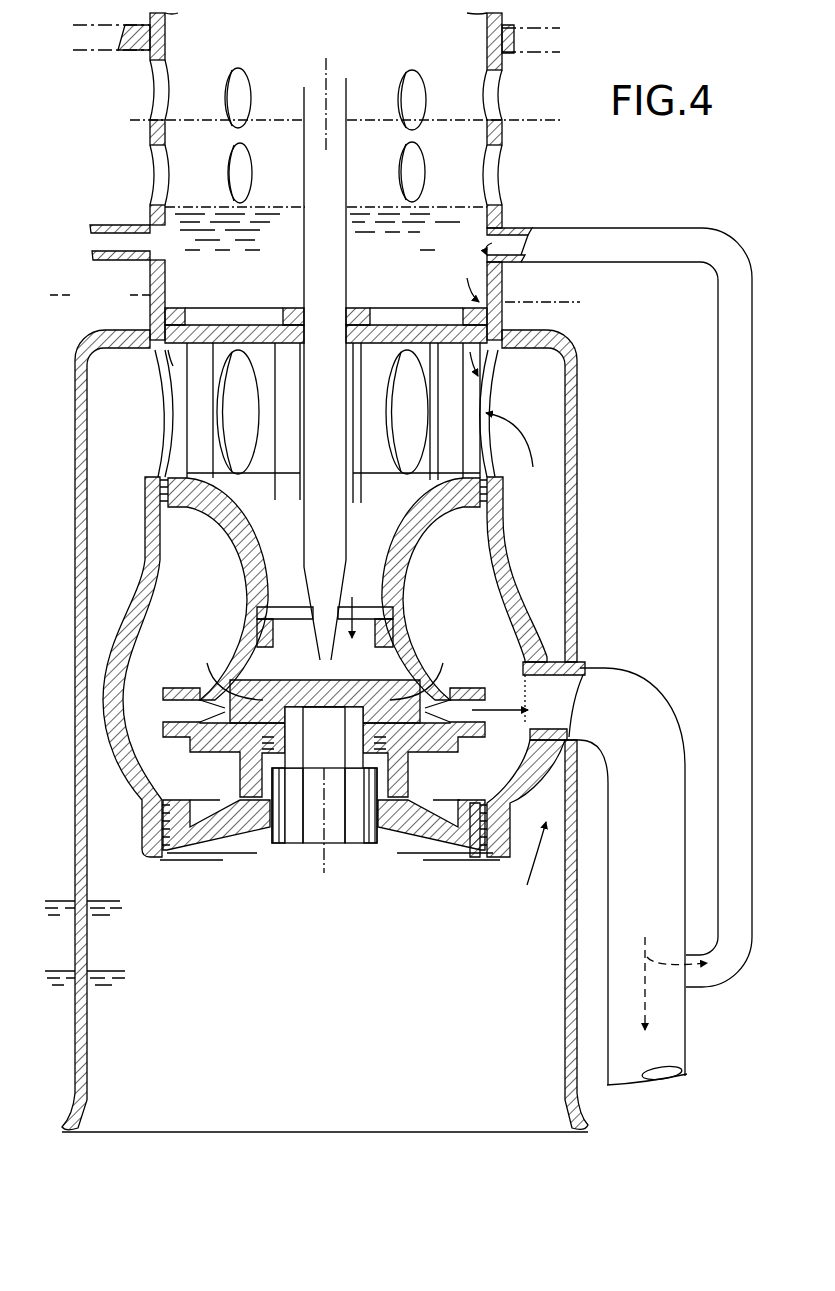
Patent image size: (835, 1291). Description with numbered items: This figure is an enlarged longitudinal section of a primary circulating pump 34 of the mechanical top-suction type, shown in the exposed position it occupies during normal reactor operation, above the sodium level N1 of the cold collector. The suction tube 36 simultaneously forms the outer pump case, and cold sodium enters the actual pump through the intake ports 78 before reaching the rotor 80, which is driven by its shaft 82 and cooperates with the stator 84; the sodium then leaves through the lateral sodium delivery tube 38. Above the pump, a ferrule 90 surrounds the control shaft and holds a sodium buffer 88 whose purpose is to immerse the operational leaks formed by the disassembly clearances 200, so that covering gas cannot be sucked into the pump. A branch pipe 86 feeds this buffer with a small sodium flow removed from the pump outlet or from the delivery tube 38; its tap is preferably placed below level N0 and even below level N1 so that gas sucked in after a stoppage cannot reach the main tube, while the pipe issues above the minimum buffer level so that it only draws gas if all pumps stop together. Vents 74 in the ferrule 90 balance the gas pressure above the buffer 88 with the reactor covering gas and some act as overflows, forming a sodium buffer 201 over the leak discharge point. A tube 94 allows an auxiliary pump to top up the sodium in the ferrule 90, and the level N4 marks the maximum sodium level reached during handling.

The pump 34 is at (595, 583).
The suction tube 36 is at (563, 1023).
The lateral sodium delivery tube 38 is at (625, 697).
The vents 74 is at (236, 168).
The cold sodium intake ports 78 is at (215, 433).
The rotor 80 is at (253, 668).
The shaft 82 is at (347, 286).
The stator 84 is at (447, 640).
The branch pipe 86 is at (588, 237).
The sodium buffer 88 is at (400, 217).
The ferrule 90 is at (152, 62).
The tube 94 is at (120, 245).
The clearances 200 is at (302, 308).
The sodium buffer 201 is at (203, 205).
The level N4 is at (523, 120).
The level N0 is at (112, 898).
The level N1 is at (107, 962).